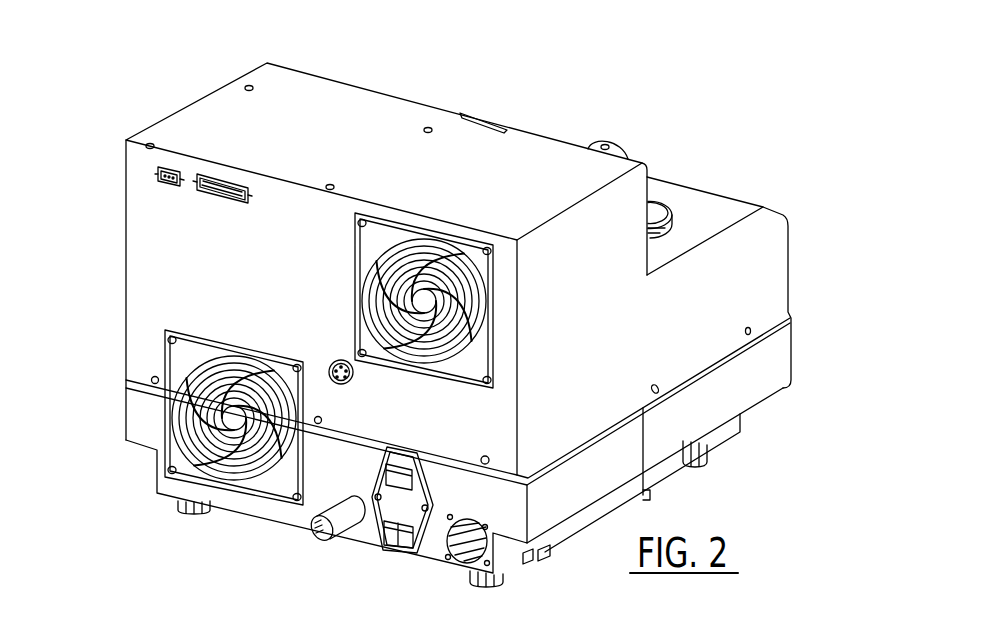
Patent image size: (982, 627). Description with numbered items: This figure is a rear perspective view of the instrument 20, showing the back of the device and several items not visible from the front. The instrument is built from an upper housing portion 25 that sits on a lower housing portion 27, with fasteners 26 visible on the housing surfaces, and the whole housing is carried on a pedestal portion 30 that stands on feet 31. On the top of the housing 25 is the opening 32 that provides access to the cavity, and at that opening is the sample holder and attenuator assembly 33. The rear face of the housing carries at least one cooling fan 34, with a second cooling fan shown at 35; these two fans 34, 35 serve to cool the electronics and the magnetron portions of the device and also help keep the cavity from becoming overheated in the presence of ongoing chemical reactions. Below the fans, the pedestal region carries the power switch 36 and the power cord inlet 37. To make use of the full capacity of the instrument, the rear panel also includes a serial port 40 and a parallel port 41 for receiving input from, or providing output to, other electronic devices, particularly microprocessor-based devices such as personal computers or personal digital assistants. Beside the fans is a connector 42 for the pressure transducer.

The device 20 is at (497, 76).
The upper housing portion 25 is at (457, 187).
The fasteners 26 is at (249, 85).
The lower housing portion 27 is at (740, 400).
The pedestal portion 30 is at (657, 472).
The feet 31 is at (192, 511).
The opening 32 is at (650, 217).
The sample holder and attenuator assembly 33 is at (667, 208).
The cooling fan 34 is at (355, 297).
The cooling fan 35 is at (213, 338).
The power switch 36 is at (385, 445).
The power cord inlet 37 is at (397, 547).
The serial port 40 is at (158, 182).
The parallel port 41 is at (217, 190).
The connector 42 is at (333, 358).